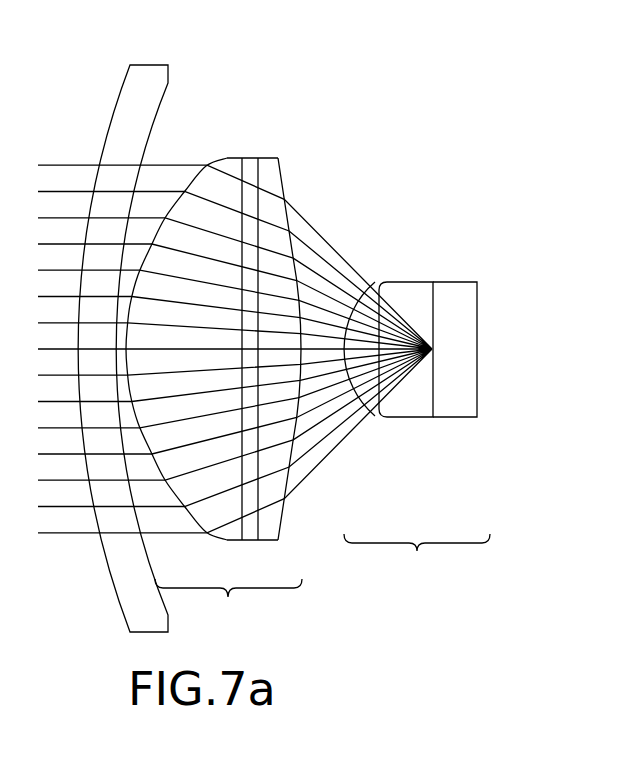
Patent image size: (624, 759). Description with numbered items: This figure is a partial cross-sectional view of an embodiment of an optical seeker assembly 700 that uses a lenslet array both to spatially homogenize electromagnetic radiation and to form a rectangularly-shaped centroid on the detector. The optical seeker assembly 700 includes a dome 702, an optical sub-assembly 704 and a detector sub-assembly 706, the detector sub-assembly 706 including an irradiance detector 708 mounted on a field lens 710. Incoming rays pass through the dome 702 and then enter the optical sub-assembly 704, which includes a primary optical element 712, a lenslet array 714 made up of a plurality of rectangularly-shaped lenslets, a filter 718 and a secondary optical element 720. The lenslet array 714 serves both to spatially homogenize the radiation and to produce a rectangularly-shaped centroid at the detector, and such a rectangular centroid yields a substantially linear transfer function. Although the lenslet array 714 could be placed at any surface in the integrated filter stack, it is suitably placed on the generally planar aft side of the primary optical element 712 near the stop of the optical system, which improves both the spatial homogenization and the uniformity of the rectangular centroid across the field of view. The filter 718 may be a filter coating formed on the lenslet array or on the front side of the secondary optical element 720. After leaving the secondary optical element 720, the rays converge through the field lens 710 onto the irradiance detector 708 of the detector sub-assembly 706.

The optical seeker assembly 700 is at (482, 139).
The dome 702 is at (111, 74).
The optical sub-assembly 704 is at (228, 605).
The detector sub-assembly 706 is at (417, 559).
The irradiance detector 708 is at (479, 302).
The field lens 710 is at (409, 290).
The primary optical element 712 is at (206, 219).
The lenslet array 714 is at (254, 147).
The filter 718 is at (272, 189).
The secondary optical element 720 is at (302, 223).